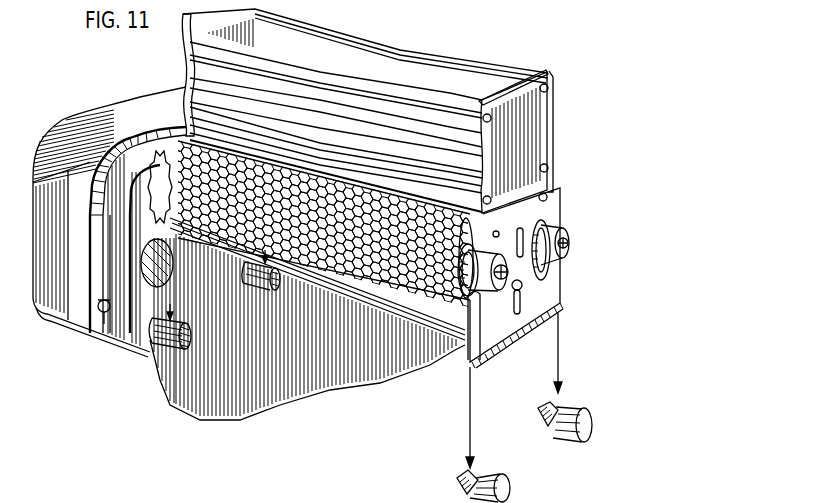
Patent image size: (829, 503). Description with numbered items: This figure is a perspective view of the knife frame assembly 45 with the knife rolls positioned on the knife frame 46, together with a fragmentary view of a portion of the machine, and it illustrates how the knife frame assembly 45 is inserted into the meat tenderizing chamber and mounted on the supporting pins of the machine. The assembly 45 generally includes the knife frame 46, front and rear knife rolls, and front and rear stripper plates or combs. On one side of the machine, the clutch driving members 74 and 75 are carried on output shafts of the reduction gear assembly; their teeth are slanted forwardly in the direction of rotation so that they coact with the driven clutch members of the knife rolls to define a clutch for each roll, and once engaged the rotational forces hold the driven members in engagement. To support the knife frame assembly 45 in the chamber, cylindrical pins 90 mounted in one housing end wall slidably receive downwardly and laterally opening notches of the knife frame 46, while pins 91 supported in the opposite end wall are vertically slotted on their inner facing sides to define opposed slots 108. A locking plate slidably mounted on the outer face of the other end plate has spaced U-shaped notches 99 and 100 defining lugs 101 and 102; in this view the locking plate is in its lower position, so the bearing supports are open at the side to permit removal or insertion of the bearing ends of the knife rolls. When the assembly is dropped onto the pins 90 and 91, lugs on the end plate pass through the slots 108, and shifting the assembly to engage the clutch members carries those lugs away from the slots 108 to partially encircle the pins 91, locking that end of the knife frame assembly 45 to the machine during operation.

The knife frame assembly 45 is at (475, 48).
The knife frame 46 is at (512, 65).
The clutch driving member 74 is at (128, 343).
The clutch driving member 75 is at (317, 317).
The pins 90 is at (167, 350).
The pins 91 is at (502, 488).
The U-shaped notch 99 is at (497, 310).
The U-shaped notch 100 is at (563, 275).
The lug 101 is at (455, 352).
The lug 102 is at (563, 258).
The slots 108 is at (475, 483).